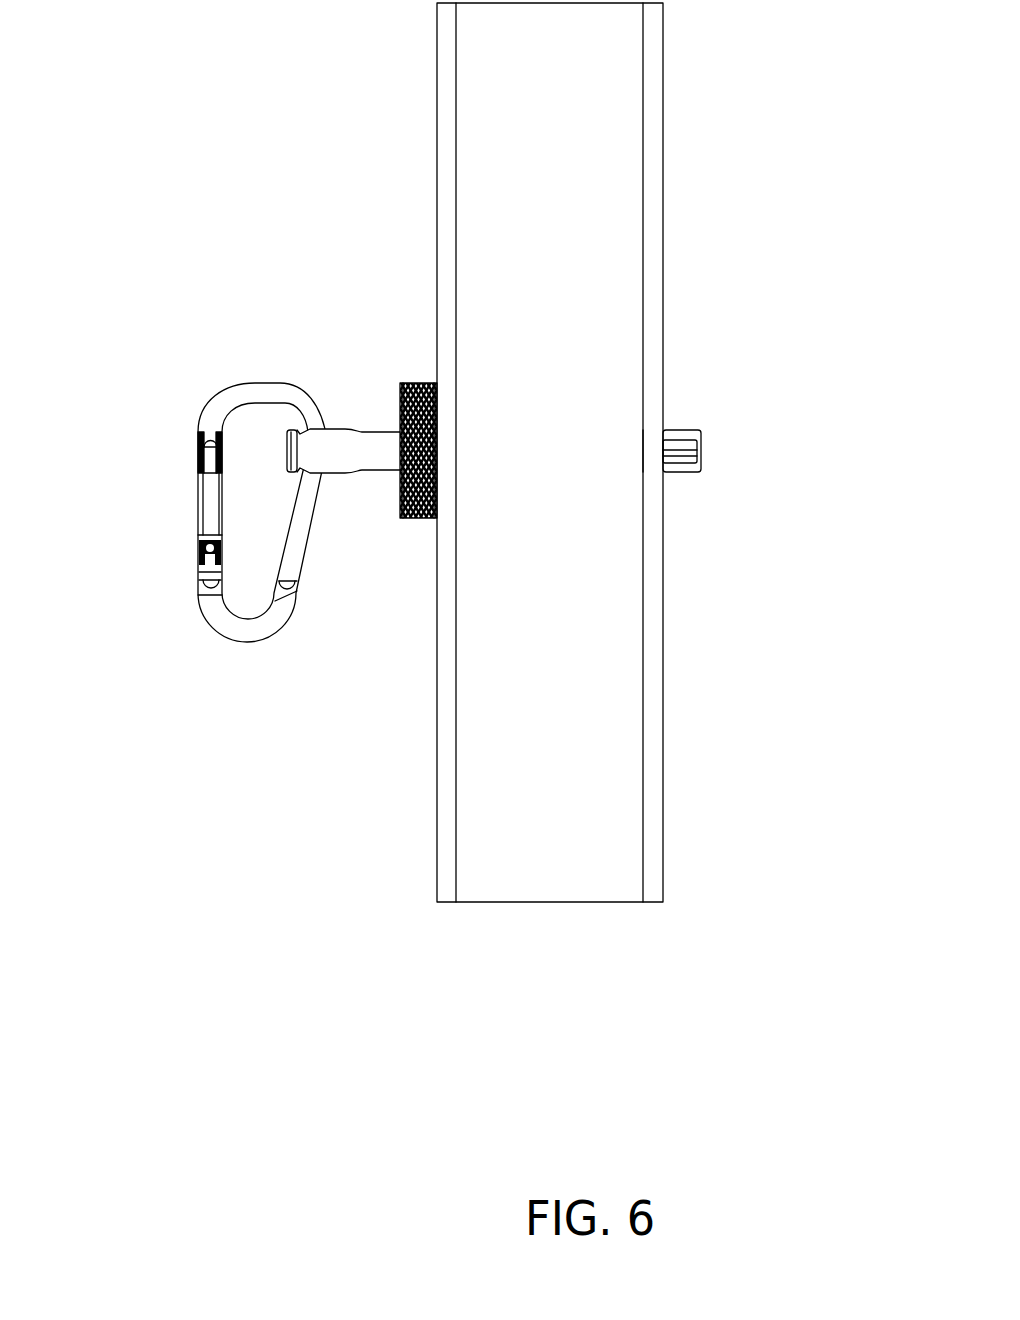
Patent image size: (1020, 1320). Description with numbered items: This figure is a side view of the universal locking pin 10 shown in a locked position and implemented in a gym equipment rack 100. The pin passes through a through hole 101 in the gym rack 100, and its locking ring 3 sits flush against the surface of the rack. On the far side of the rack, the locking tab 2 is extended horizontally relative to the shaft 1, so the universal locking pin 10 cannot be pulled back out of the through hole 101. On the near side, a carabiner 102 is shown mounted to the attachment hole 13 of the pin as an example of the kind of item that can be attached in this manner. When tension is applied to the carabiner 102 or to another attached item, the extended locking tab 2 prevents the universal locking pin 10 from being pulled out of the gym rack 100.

The universal locking pin 10 is at (292, 426).
The shaft 1 is at (274, 482).
The locking ring 3 is at (396, 381).
The attachment hole 13 is at (318, 428).
The carabiner 102 is at (249, 645).
The gym equipment rack 100 is at (659, 794).
The through hole 101 is at (659, 452).
The locking tab 2 is at (704, 446).